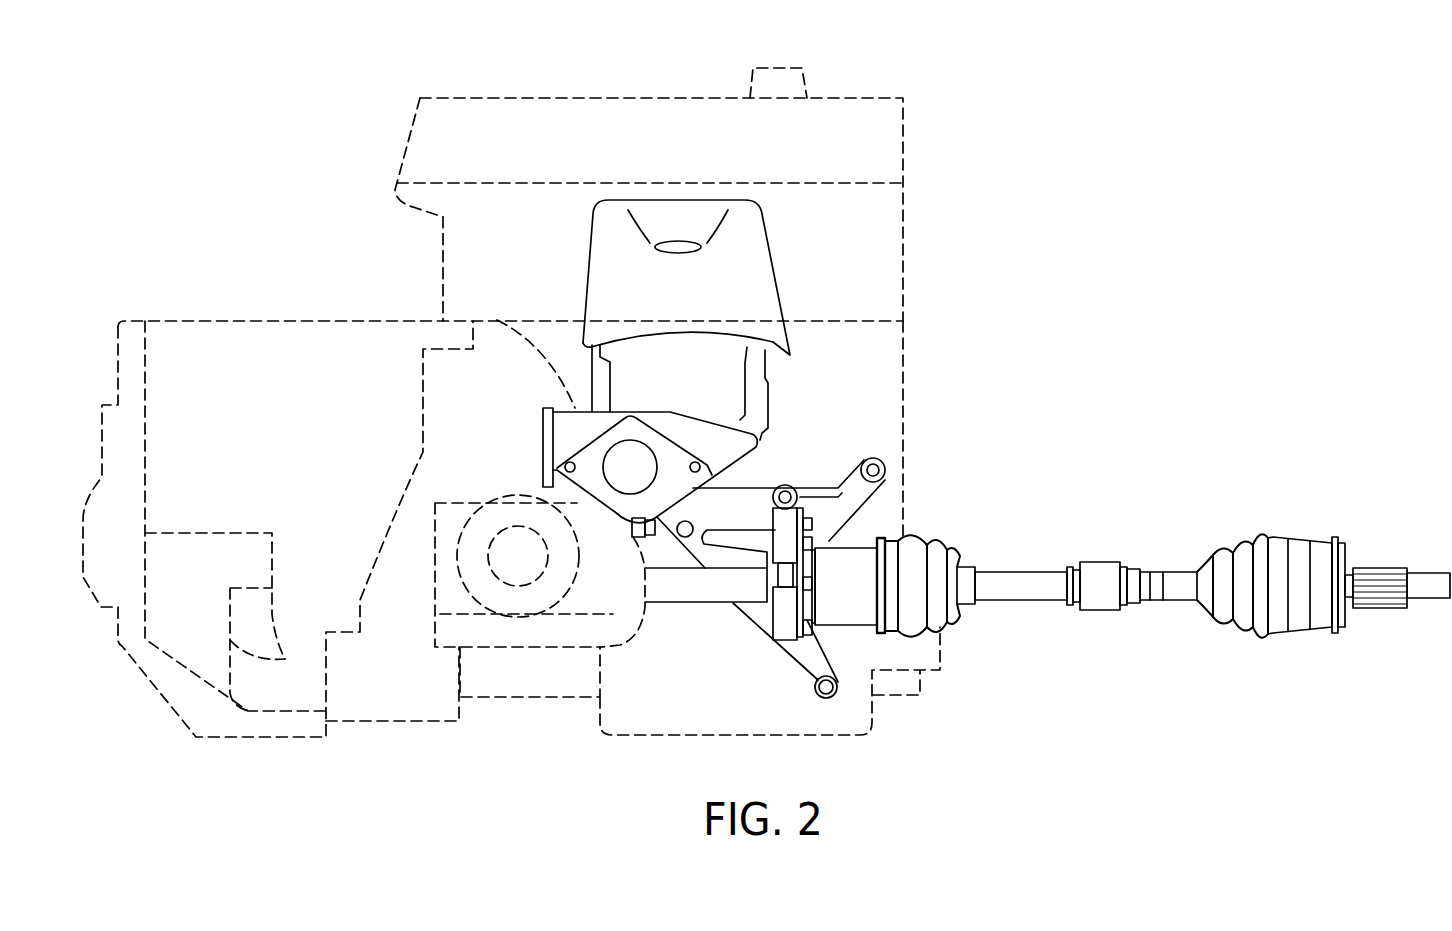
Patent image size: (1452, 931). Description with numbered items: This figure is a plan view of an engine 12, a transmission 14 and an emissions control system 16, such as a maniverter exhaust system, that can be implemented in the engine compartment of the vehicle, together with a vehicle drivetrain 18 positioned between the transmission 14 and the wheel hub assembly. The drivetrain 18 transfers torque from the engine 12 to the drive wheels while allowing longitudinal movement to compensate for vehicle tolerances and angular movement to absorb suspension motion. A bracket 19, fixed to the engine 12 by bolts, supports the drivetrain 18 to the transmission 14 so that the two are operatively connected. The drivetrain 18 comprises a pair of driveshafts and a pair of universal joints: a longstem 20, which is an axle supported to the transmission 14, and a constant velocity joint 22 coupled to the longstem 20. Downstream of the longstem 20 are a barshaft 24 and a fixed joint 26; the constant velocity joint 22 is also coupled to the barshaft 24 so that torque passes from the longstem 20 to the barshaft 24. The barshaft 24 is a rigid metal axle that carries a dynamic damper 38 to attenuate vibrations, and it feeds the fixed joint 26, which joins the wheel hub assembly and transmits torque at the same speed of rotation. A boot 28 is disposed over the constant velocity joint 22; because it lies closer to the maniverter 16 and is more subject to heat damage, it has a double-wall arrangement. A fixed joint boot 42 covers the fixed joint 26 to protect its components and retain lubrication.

The engine 12 is at (858, 97).
The transmission 14 is at (535, 648).
The emissions control system 16 is at (767, 247).
The vehicle drivetrain 18 is at (1294, 452).
The bracket 19 is at (785, 660).
The longstem 20 is at (695, 603).
The constant velocity joint 22 is at (927, 585).
The barshaft 24 is at (1023, 570).
The fixed joint 26 is at (1288, 573).
The boot 28 is at (900, 590).
The dynamic damper 38 is at (1103, 610).
The fixed joint boot 42 is at (1247, 545).